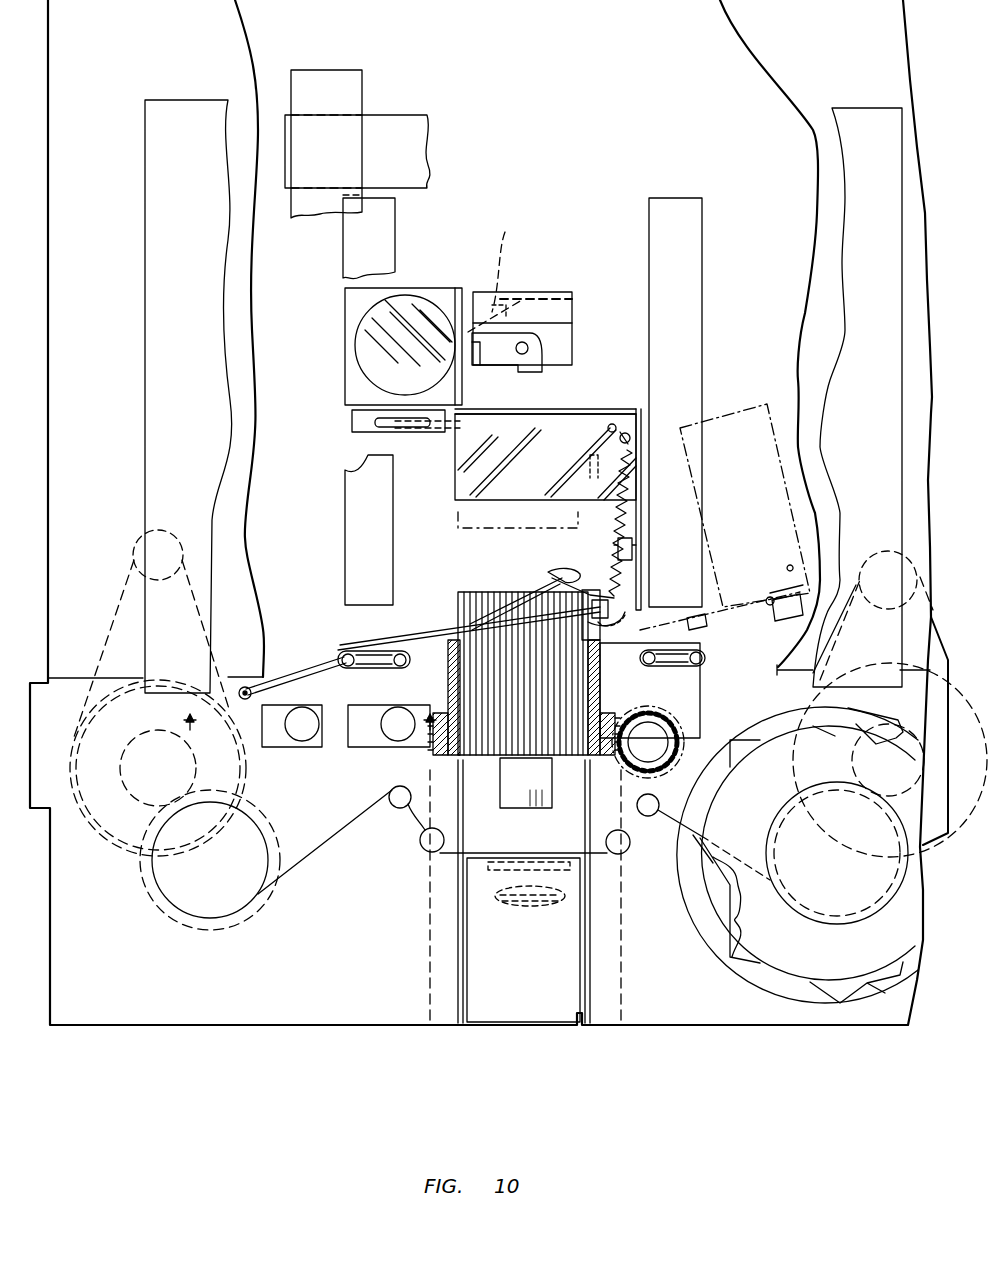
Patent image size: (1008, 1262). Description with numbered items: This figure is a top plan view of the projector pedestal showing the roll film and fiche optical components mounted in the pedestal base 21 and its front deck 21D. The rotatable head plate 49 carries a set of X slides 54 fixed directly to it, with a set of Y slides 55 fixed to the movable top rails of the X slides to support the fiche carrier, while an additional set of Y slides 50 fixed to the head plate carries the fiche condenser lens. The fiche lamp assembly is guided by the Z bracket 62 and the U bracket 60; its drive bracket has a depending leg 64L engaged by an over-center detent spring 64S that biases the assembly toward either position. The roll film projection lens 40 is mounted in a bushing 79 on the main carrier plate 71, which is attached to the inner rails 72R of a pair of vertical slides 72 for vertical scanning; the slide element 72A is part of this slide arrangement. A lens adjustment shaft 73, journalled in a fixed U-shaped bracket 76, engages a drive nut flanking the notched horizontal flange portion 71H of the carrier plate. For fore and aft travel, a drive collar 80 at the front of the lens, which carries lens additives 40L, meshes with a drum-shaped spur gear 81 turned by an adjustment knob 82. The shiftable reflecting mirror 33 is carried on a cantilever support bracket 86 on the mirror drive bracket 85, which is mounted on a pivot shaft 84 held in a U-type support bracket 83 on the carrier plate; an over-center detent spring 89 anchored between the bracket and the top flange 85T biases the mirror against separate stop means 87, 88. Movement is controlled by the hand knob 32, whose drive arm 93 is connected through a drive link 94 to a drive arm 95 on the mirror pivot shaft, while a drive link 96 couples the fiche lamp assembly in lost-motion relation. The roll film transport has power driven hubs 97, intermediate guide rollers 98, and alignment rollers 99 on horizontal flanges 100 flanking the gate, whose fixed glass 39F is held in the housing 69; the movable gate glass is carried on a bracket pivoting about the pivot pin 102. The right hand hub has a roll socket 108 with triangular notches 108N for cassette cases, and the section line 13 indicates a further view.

The pedestal base 21 is at (98, 237).
The front deck 21D is at (110, 1000).
The head plate 49 is at (191, 237).
The X slides 54 is at (375, 128).
The Y slides 55 is at (320, 82).
The Y slides 50 is at (378, 228).
The depending leg 64L is at (403, 346).
The detent spring 64S is at (498, 240).
The Z bracket 62 is at (574, 300).
The U bracket 60 is at (520, 368).
The drive link 96 is at (440, 432).
The support bracket 86 is at (580, 409).
The shiftable reflecting mirror 33 is at (536, 473).
The mirror drive bracket 85 is at (641, 497).
The top flange 85T is at (630, 435).
The detent spring 89 is at (618, 520).
The stop means 87 is at (632, 552).
The drive arm 95 is at (552, 572).
The main carrier plate 71 is at (432, 638).
The drive link 94 is at (295, 690).
The drive arm 93 is at (246, 700).
The left slotted bracket 72A is at (375, 652).
The vertical slides 72 is at (362, 668).
The inner rails 72R is at (672, 667).
The stop means 88 is at (707, 622).
The U-type support bracket 83 is at (630, 648).
The pivot shaft 84 is at (595, 625).
The roll film projection lens 40 is at (546, 636).
The bushing 79 is at (460, 690).
The drive collar 80 is at (446, 756).
The lens additives 40L is at (542, 790).
The spur gear 81 is at (690, 712).
The adjustment knob 82 is at (652, 748).
The section line 13- 13 is at (307, 705).
The U-shaped bracket 76 is at (262, 760).
The hand knob 32 is at (310, 740).
The horizontal flange portion 71H is at (362, 748).
The lens adjustment shaft 73 is at (406, 740).
The intermediate guide rollers 98 is at (400, 800).
The alignment rollers 99 is at (428, 848).
The power driven hubs 97 is at (258, 905).
The roll socket 108 is at (714, 952).
The triangular notches 108N is at (735, 890).
The housing 69 is at (546, 950).
The pivot pin 102 is at (612, 922).
The fixed glass 39F is at (485, 862).
The horizontal flanges 100 is at (440, 933).